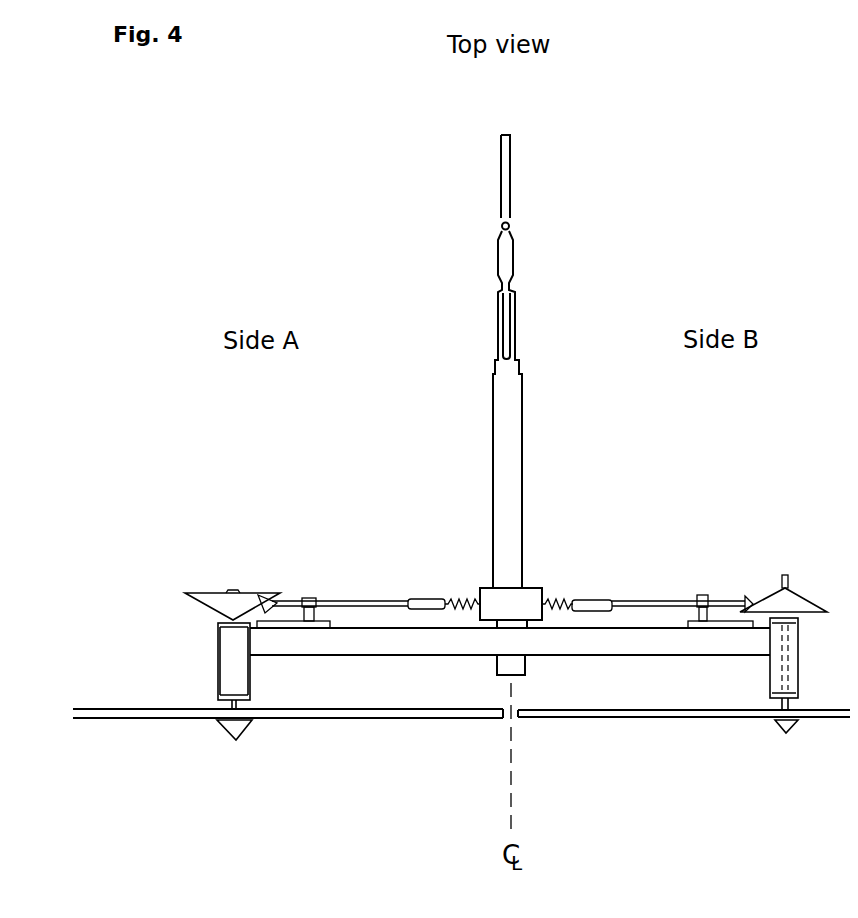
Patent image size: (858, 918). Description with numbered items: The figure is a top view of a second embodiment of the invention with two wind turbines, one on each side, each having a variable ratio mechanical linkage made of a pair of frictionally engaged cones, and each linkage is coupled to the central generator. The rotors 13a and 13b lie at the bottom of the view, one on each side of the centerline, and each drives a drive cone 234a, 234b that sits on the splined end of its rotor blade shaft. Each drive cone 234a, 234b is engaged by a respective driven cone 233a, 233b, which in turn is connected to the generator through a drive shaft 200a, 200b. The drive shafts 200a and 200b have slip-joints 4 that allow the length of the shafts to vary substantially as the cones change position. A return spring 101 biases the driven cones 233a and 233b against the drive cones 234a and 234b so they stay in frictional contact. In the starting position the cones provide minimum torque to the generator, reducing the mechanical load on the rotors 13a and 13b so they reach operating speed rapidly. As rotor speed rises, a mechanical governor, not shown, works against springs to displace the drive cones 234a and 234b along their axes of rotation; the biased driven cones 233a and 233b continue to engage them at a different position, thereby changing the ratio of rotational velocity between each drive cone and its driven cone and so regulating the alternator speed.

The slip-joint 4 is at (417, 600).
The return spring 101 is at (457, 600).
The drive shaft 200a is at (370, 600).
The drive shaft 200b is at (678, 602).
The driven cone 233a is at (263, 593).
The driven cone 233b is at (750, 595).
The drive cone 234a is at (200, 593).
The drive cone 234b is at (800, 592).
The rotor 13a is at (336, 722).
The rotor 13b is at (612, 720).